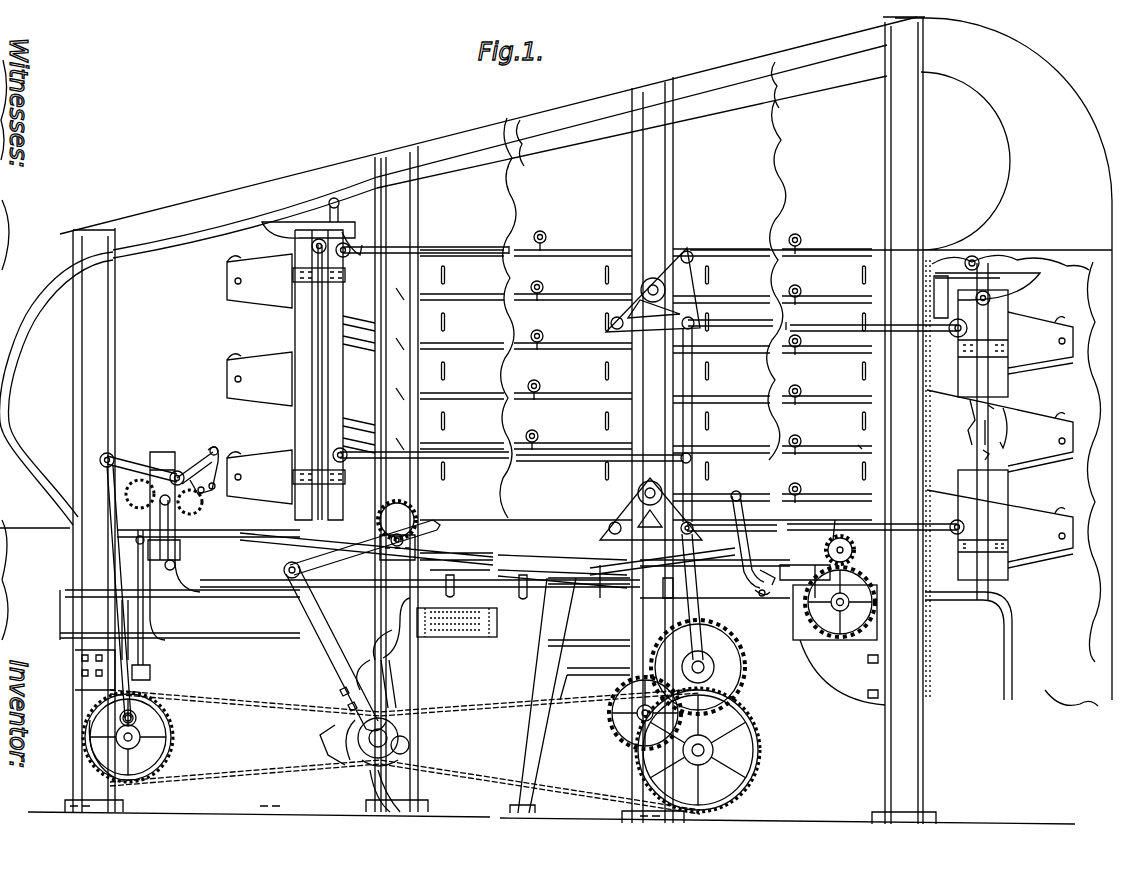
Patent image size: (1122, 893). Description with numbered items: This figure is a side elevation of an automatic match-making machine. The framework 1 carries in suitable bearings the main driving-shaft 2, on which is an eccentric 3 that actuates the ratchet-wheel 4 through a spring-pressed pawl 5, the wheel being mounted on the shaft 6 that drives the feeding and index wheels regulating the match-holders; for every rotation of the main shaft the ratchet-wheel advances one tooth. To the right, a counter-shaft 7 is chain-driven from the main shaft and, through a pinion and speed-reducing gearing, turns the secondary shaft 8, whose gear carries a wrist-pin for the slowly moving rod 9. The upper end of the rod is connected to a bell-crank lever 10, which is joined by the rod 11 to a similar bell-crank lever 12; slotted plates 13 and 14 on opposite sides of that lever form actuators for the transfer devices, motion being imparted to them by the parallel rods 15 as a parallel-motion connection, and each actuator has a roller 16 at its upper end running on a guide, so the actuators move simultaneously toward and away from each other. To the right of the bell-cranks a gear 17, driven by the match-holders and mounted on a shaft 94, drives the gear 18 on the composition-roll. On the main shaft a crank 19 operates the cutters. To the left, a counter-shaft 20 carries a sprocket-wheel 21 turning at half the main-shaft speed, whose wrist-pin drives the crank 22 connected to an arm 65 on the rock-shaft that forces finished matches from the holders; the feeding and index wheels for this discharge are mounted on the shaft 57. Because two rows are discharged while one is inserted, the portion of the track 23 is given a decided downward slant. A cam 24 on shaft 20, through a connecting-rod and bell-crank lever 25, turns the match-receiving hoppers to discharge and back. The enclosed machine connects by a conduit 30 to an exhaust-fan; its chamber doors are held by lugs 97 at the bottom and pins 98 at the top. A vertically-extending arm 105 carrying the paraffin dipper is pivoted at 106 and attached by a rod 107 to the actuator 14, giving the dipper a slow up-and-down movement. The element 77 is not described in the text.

The framework 1 is at (668, 210).
The main driving-shaft 2 is at (392, 739).
The eccentric 3 is at (392, 707).
The ratchet-wheel 4 is at (380, 520).
The spring-pressed pawl 5 is at (430, 528).
The shaft 6 is at (416, 576).
The counter-shaft 7 is at (714, 745).
The secondary shaft 8 is at (712, 668).
The rod 9 is at (690, 603).
The bell-crank lever 10 is at (618, 512).
The rod 11 is at (692, 387).
The bell-crank lever 12 is at (700, 258).
The slotted plate 13 is at (300, 328).
The slotted plate 14 is at (1008, 380).
The parallel rods 15 is at (470, 246).
The roller 16 is at (332, 204).
The gear 17 is at (835, 540).
The gear 18 is at (820, 607).
The crank 19 is at (392, 672).
The counter-shaft 20 is at (152, 742).
The sprocket-wheel 21 is at (160, 726).
The crank 22 is at (120, 616).
The track 23 is at (276, 538).
The cam 24 is at (150, 684).
The bell-crank lever 25 is at (180, 552).
The conduit 30 is at (1048, 712).
The shaft 57 is at (196, 502).
The arm 65 is at (138, 462).
The rod 77 is at (146, 617).
The shaft 94 is at (842, 540).
The lugs 97 is at (862, 456).
The pins 98 is at (800, 448).
The vertically-extending arm 105 is at (738, 506).
The pivot 106 is at (760, 596).
The rod 107 is at (772, 512).